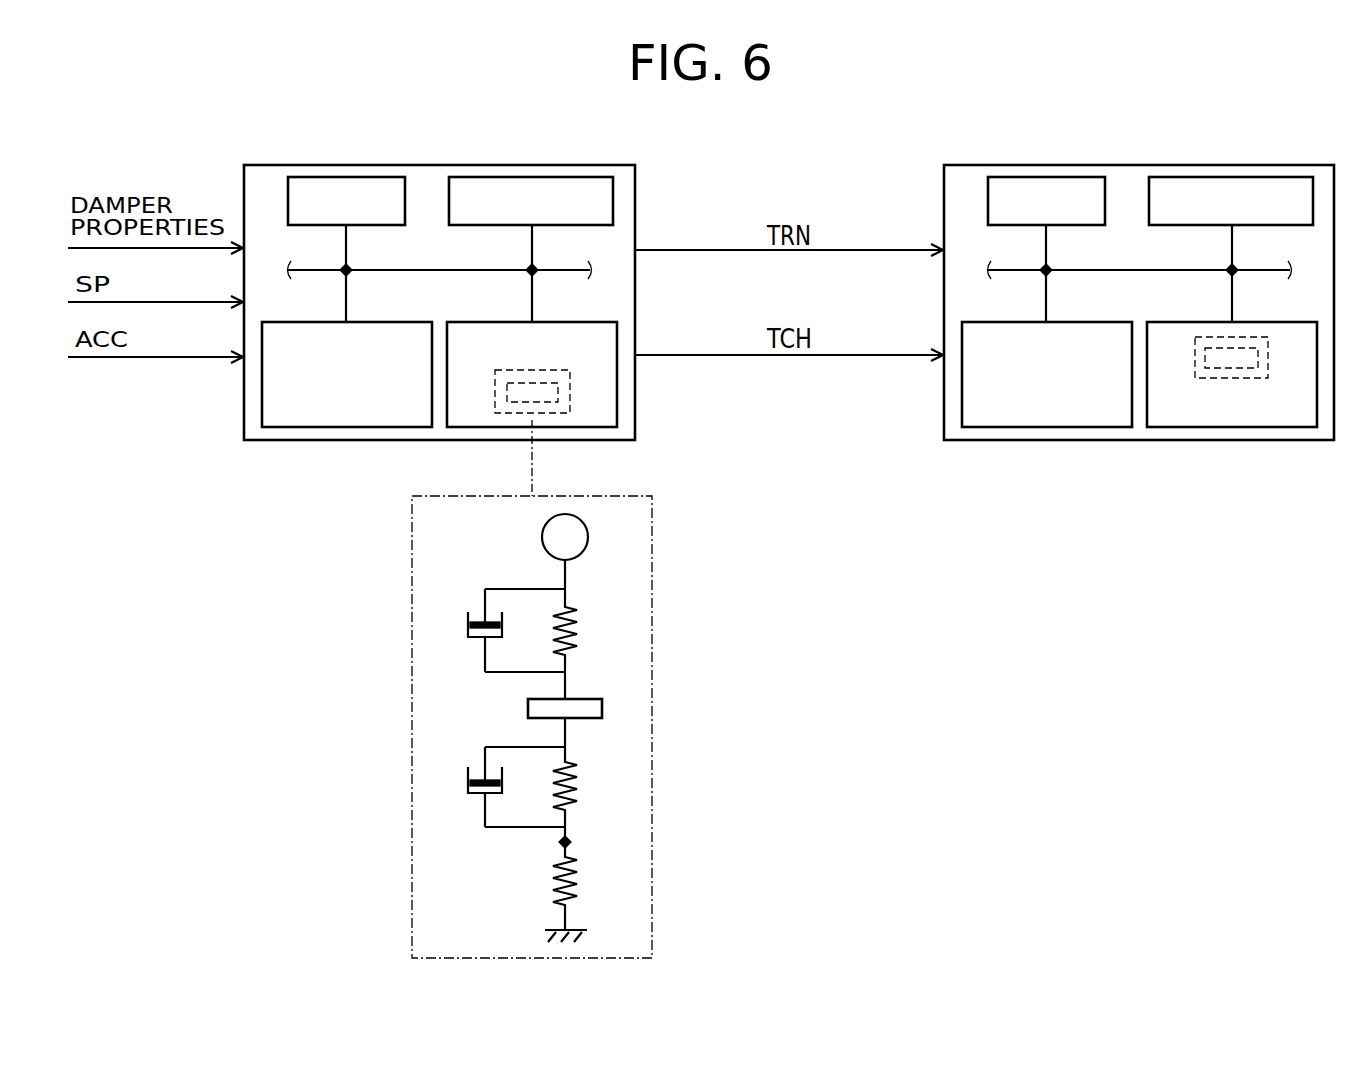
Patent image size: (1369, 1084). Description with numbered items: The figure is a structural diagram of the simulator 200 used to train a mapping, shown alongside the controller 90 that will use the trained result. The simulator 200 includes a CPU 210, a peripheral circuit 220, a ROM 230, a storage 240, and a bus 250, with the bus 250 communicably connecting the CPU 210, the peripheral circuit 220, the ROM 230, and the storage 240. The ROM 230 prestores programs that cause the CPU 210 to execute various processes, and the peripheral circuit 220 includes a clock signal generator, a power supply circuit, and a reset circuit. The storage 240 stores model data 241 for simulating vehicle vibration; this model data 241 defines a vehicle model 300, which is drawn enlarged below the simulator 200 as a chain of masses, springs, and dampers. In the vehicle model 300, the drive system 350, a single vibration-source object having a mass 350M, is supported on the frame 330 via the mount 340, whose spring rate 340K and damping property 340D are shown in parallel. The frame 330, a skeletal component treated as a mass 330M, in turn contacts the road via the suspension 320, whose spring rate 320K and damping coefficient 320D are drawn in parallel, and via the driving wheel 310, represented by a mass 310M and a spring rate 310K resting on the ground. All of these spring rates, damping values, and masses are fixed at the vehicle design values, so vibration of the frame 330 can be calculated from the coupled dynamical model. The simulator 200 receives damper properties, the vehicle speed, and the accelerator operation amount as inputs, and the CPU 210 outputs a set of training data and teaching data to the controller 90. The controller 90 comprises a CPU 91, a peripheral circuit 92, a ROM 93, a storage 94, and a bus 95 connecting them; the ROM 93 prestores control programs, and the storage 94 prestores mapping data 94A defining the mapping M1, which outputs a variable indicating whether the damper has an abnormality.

The simulator 200 is at (263, 165).
The CPU 210 is at (363, 177).
The peripheral circuit 220 is at (547, 177).
The ROM 230 is at (363, 322).
The storage 240 is at (548, 322).
The bus 250 is at (550, 270).
The model data 241 is at (570, 380).
The vehicle model 300 is at (558, 392).
The controller 90 is at (963, 165).
The central processing unit 91 is at (1063, 225).
The peripheral circuit 92 is at (1247, 177).
The read-only memory 93 is at (1045, 427).
The storage 94 is at (1232, 427).
The mapping data 94A is at (1266, 334).
The bus 95 is at (1250, 270).
The mapping M1 is at (1258, 358).
The drive system 350 is at (542, 537).
The mass 350M is at (588, 538).
The mount 340 is at (450, 642).
The damping property 340D is at (468, 618).
The spring rate 340K is at (608, 601).
The frame 330 is at (528, 708).
The wheel mass 330M is at (588, 699).
The suspension 320 is at (450, 798).
The damping coefficient 320D is at (468, 775).
The spring rate 320K is at (608, 760).
The driving wheel 310 is at (450, 906).
The mass 310M is at (572, 842).
The spring rate 310K is at (580, 882).